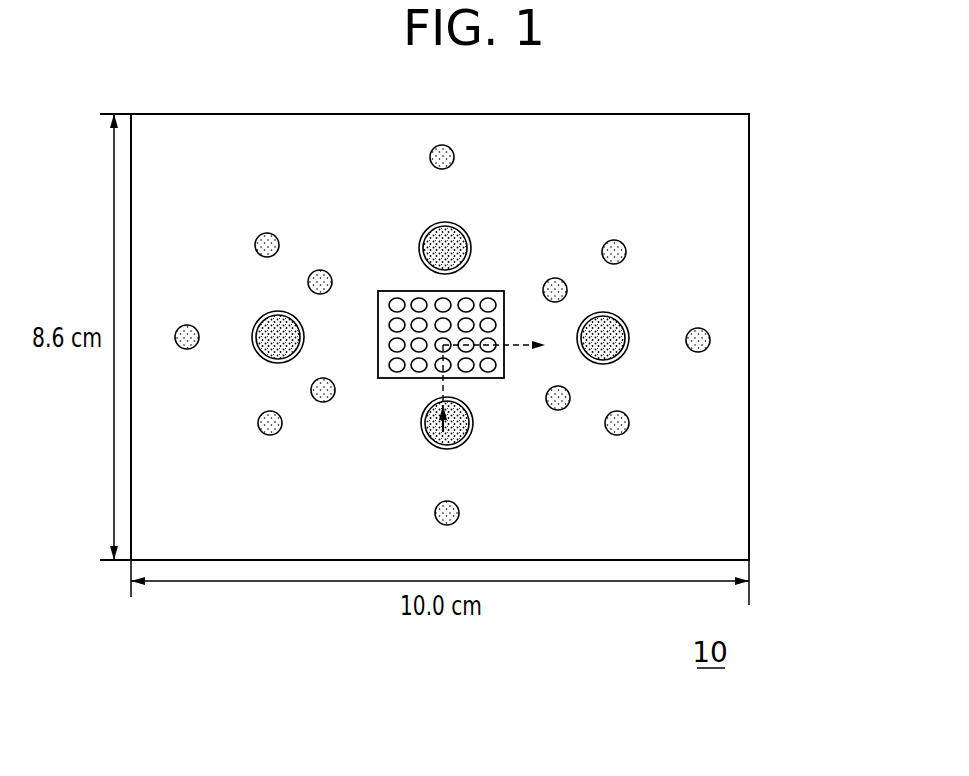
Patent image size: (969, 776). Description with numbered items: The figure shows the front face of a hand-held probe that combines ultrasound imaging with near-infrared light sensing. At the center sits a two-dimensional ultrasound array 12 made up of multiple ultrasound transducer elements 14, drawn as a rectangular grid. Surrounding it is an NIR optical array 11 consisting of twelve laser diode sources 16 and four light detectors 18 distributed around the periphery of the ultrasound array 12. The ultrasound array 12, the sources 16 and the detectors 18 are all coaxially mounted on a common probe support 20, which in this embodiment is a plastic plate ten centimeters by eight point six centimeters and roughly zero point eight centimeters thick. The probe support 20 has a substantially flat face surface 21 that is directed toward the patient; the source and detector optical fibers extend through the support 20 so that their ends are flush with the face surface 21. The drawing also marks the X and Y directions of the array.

The NIR optical array 11 is at (340, 210).
The two-dimensional ultrasound array 12 is at (478, 338).
The ultrasound transducer elements 14 is at (490, 372).
The laser diode sources 16 is at (455, 155).
The light detectors 18 is at (622, 326).
The probe support 20 is at (752, 164).
The face surface 21 is at (707, 228).